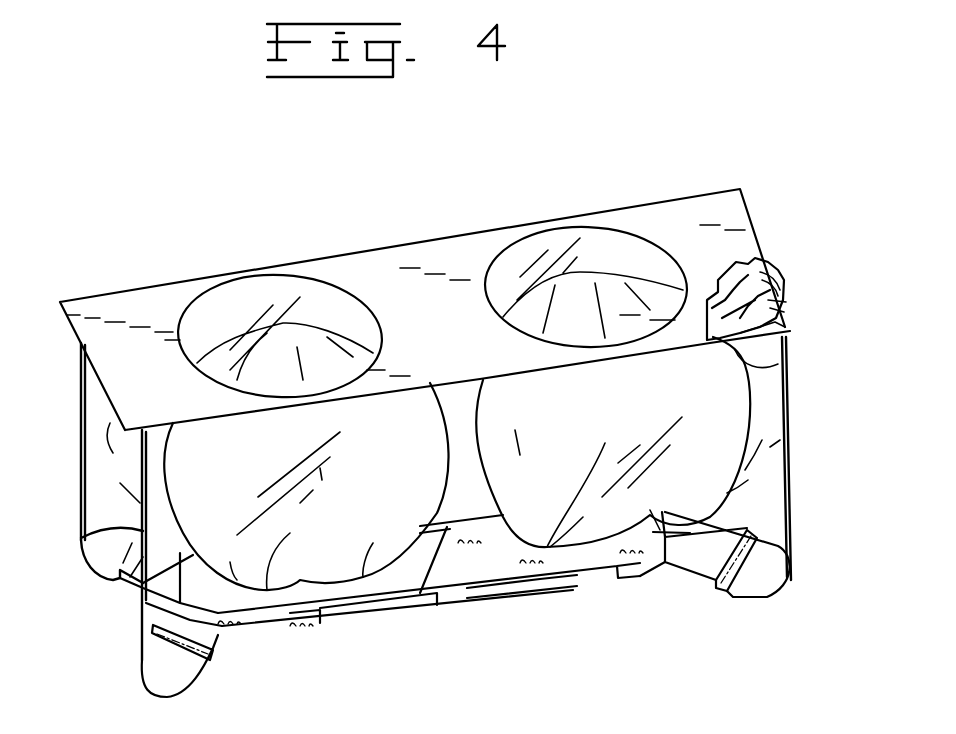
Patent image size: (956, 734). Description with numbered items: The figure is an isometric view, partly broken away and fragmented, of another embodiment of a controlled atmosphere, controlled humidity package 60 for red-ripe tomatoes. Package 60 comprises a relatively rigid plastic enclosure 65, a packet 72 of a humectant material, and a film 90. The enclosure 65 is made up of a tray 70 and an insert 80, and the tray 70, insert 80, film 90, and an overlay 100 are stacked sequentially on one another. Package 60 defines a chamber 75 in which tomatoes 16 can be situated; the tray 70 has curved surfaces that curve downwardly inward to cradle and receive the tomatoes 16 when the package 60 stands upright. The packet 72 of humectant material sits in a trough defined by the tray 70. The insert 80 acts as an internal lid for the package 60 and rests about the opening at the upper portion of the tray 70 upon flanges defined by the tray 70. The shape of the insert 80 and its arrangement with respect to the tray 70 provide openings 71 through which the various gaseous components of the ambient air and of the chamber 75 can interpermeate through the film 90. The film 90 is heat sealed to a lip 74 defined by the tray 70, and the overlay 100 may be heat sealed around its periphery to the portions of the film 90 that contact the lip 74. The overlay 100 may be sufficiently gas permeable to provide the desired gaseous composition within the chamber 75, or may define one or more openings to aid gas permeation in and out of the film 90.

The package 60 is at (601, 182).
The overlay 100 is at (722, 232).
The insert 80 is at (782, 270).
The film 90 is at (775, 283).
The openings 71 is at (790, 295).
The lip 74 is at (785, 328).
The tray 70 is at (787, 430).
The enclosure 65 is at (83, 483).
The tomatoes 16 is at (260, 587).
The chamber 75 is at (420, 600).
The packet 72 is at (473, 560).